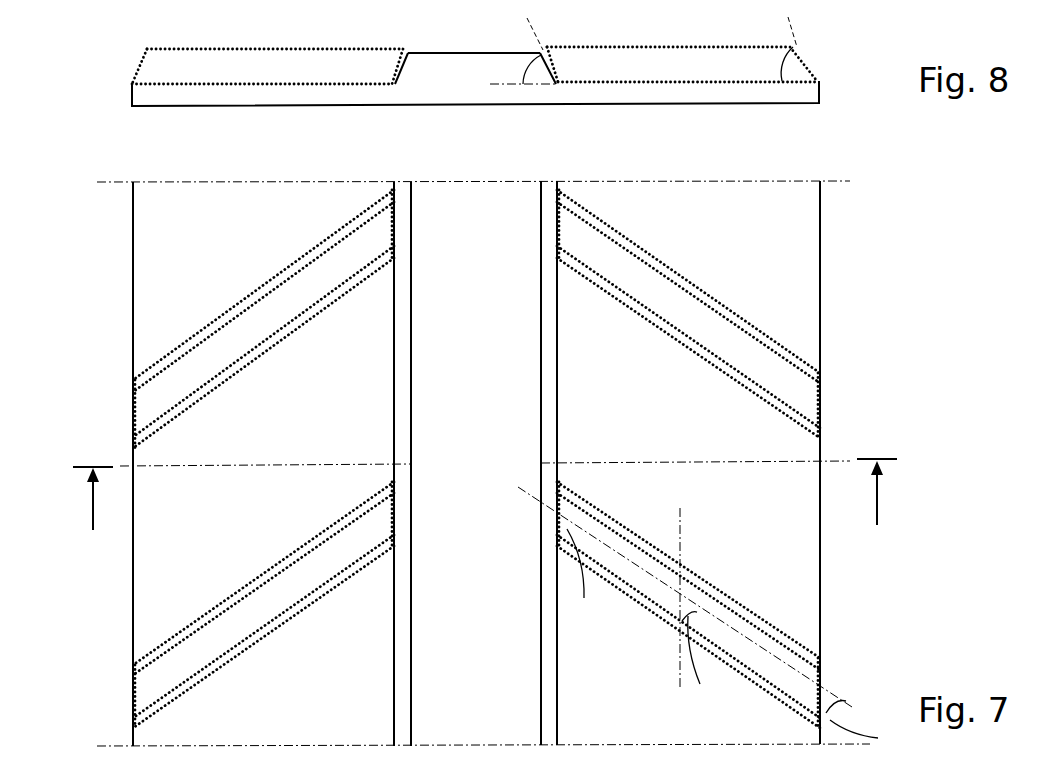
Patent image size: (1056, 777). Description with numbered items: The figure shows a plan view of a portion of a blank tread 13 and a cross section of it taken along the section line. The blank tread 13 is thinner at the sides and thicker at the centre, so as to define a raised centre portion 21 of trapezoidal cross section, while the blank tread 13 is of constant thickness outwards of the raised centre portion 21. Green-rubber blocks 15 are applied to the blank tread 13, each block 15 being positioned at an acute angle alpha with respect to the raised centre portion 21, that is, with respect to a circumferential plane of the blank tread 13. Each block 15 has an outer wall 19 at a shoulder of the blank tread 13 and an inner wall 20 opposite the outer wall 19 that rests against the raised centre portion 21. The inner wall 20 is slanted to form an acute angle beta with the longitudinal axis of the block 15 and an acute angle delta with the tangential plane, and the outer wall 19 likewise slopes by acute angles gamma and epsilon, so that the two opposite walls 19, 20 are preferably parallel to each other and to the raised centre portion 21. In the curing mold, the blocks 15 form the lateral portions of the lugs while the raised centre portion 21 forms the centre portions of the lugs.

In FIG. 8, the blank tread 13 is at (108, 95).
In FIG. 7, the blank tread 13 is at (106, 608).
In FIG. 8, the block 15 is at (263, 60).
In FIG. 7, the block 15 is at (363, 240).
In FIG. 8, the outer wall 19 is at (135, 62).
In FIG. 7, the outer wall 19 is at (131, 412).
In FIG. 8, the inner wall 20 is at (402, 68).
In FIG. 7, the inner wall 20 is at (396, 224).
In FIG. 8, the raised centre portion 21 is at (458, 72).
In FIG. 7, the raised centre portion 21 is at (515, 250).